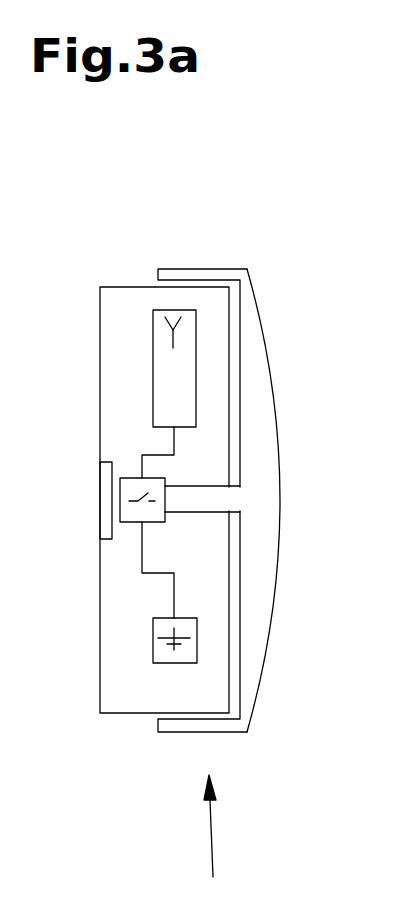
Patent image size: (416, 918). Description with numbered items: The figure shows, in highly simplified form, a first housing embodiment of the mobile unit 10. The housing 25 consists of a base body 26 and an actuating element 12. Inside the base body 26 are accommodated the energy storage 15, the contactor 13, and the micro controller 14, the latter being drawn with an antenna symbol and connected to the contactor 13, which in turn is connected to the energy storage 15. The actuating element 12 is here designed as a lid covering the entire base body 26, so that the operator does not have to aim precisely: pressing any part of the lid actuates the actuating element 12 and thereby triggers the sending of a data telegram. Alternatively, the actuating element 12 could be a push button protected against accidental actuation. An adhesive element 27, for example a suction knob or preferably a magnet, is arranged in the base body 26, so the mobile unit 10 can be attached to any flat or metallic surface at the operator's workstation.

The mobile unit 10 is at (297, 348).
The actuating element 12 is at (257, 643).
The contactor 13 is at (142, 512).
The micro controller 14 is at (189, 335).
The energy storage 15 is at (163, 654).
The housing 25 is at (213, 844).
The base body 26 is at (123, 306).
The adhesive element 27 is at (107, 487).